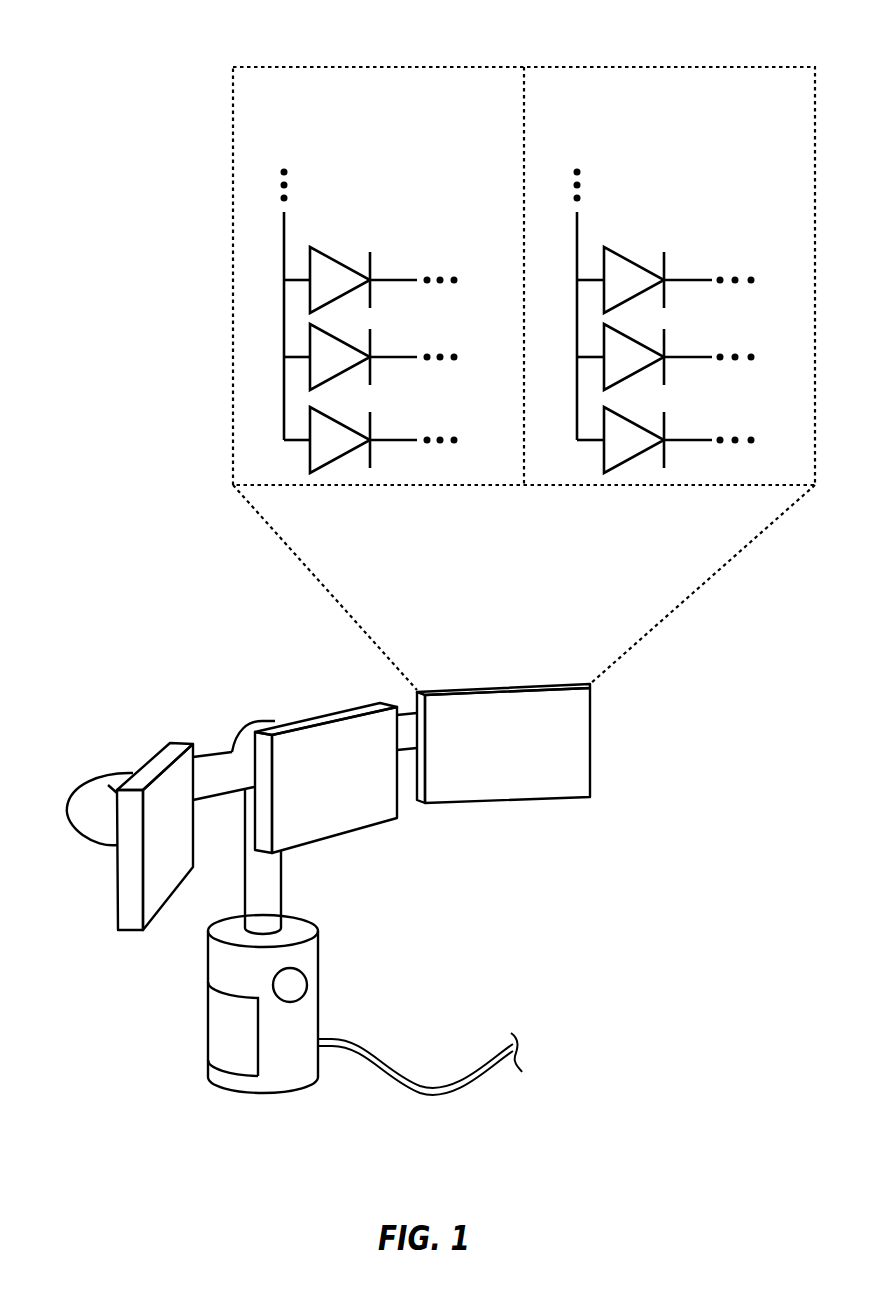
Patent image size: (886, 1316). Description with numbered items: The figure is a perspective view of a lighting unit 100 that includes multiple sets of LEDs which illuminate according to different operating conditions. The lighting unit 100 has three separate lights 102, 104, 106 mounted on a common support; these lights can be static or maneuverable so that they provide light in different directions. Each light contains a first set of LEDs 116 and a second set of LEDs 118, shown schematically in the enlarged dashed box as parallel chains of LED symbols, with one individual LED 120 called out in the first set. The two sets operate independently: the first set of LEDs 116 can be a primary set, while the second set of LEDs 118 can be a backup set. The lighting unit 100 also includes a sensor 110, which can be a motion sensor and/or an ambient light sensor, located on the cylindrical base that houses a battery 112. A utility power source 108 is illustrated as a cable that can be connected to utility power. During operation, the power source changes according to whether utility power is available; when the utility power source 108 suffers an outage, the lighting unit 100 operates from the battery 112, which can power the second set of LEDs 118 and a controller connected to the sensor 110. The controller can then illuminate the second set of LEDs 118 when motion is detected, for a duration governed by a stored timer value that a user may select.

The lighting unit 100 is at (105, 82).
The light 102 is at (151, 753).
The light 104 is at (328, 712).
The light 106 is at (498, 688).
The utility power source 108 is at (457, 1093).
The sensor 110 is at (308, 982).
The battery 112 is at (184, 1034).
The first set of LEDs 116 is at (377, 134).
The second set of LEDs 118 is at (685, 134).
The LED 120 is at (312, 465).